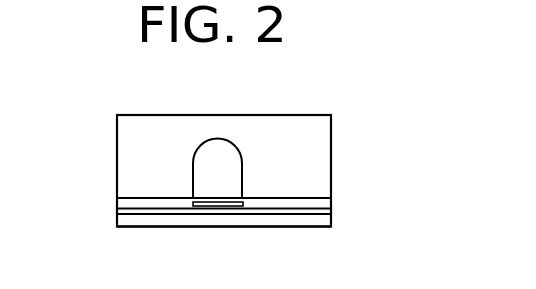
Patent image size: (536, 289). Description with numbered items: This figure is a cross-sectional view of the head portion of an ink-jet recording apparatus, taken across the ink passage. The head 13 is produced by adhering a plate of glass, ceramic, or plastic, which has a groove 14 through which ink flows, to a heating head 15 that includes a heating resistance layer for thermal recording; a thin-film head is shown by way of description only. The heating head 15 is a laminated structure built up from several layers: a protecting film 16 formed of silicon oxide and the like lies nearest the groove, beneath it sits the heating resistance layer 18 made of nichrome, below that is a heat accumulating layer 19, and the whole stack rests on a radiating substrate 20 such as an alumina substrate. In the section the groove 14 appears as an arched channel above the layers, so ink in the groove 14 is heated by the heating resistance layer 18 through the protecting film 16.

The head 13 is at (127, 115).
The groove 14 is at (214, 141).
The protecting film 16 is at (266, 200).
The heating resistance layer 18 is at (243, 203).
The heat accumulating layer 19 is at (307, 211).
The heating head 15 is at (336, 193).
The radiating substrate 20 is at (303, 221).